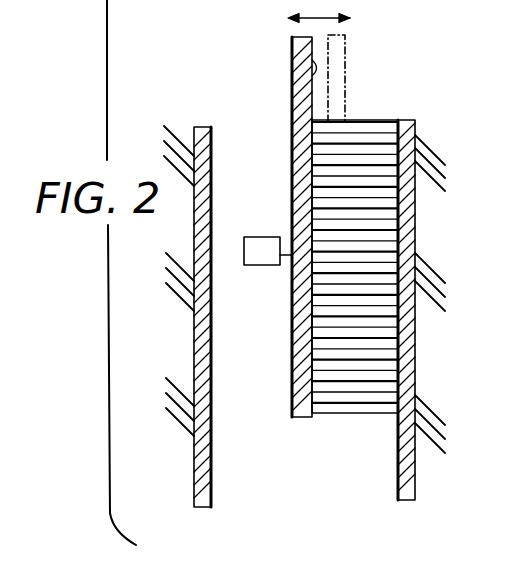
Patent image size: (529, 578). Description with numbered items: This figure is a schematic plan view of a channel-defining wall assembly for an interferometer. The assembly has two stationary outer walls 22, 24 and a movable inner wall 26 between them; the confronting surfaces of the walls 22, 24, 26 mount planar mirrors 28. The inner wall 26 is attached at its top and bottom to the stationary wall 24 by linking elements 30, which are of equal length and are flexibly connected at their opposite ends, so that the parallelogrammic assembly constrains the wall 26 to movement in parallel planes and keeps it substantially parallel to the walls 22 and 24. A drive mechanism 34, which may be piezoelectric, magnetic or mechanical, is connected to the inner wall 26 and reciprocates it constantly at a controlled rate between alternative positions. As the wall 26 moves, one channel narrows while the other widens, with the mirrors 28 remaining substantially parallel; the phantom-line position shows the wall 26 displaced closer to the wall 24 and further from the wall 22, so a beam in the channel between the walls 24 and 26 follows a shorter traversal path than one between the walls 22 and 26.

The stationary outer wall 22 is at (205, 478).
The stationary outer wall 24 is at (411, 480).
The movable inner wall 26 is at (337, 97).
The planar mirror 28 is at (292, 84).
The linking element 30 is at (370, 150).
The drive mechanism 34 is at (257, 256).